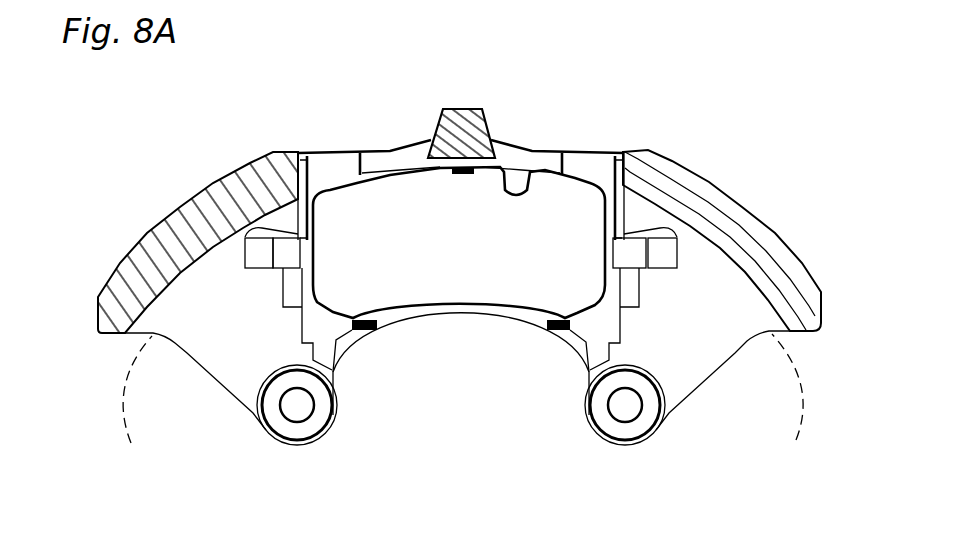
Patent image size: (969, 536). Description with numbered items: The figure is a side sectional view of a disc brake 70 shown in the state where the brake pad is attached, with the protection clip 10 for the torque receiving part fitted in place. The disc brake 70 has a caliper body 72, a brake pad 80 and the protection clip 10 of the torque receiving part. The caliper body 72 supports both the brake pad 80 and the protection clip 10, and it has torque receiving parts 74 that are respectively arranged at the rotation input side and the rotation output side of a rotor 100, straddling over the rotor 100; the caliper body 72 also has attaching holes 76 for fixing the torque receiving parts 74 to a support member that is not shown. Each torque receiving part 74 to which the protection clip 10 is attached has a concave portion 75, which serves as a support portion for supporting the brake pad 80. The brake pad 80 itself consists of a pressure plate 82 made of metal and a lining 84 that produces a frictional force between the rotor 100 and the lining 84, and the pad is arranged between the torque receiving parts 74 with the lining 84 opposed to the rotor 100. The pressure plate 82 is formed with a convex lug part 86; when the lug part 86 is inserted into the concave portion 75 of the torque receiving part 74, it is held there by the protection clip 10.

The protection clip 10 is at (282, 246).
The disc brake 70 is at (523, 85).
The caliper body 72 is at (727, 188).
The torque receiving part 74 is at (263, 320).
The concave portion 75 is at (256, 247).
The attaching hole 76 is at (307, 428).
The brake pad 80 is at (460, 282).
The pressure plate 82 is at (353, 182).
The lining 84 is at (395, 208).
The lug part 86 is at (297, 253).
The rotor 100 is at (461, 401).